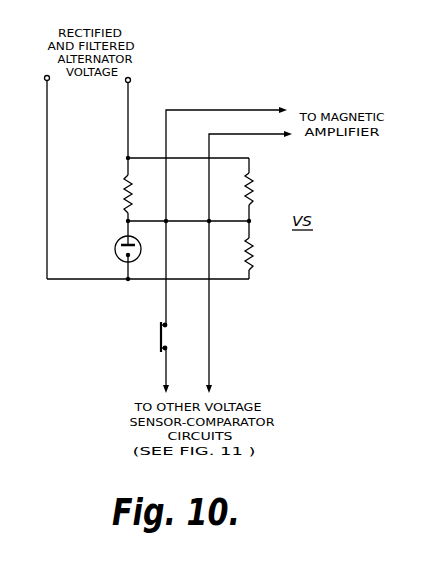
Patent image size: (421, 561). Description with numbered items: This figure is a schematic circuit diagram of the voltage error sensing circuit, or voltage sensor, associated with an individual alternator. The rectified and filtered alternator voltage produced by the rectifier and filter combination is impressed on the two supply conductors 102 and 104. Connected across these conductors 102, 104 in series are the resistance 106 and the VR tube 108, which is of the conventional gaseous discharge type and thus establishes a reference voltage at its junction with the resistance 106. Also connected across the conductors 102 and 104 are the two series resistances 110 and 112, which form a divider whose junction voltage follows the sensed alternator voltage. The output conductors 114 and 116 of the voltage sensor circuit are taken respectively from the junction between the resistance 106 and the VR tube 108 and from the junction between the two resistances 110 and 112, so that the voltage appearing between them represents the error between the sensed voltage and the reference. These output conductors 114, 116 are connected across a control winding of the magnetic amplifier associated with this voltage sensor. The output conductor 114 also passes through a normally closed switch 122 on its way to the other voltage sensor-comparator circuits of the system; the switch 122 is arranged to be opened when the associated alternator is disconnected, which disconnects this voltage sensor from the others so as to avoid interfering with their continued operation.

The conductor 102 is at (48, 163).
The conductor 104 is at (129, 110).
The resistance 106 is at (124, 191).
The VR tube 108 is at (115, 247).
The resistance 110 is at (253, 190).
The resistance 112 is at (253, 258).
The output conductor 114 is at (226, 110).
The output conductor 116 is at (256, 136).
The switch 122 is at (159, 338).